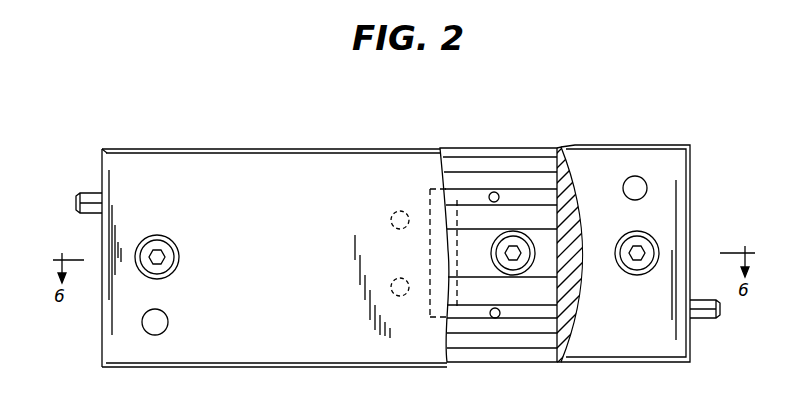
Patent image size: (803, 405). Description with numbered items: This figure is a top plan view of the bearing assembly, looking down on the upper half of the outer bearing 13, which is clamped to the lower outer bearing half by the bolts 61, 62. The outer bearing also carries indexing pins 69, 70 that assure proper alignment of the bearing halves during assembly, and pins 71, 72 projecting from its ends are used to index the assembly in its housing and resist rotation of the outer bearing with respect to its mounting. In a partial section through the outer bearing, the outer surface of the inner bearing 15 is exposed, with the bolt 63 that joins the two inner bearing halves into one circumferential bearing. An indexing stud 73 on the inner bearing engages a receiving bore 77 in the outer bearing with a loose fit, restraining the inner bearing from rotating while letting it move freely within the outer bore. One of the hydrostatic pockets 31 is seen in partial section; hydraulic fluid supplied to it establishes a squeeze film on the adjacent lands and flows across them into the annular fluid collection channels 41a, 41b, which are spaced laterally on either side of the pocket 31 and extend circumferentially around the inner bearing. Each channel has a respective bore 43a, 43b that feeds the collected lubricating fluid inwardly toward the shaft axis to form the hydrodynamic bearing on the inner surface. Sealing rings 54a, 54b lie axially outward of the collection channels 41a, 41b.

The upper half of the outer bearing 13 is at (187, 163).
The lower half of the inner bearing 15 is at (494, 249).
The hydrostatic pocket 31 is at (574, 232).
The fluid collection channel 41a is at (533, 197).
The fluid collection channel 41b is at (462, 316).
The bore 43a is at (494, 191).
The bore 43b is at (494, 319).
The sealing ring 54a is at (458, 165).
The sealing ring 54b is at (535, 340).
The bolt 61 is at (633, 248).
The bolt 62 is at (162, 260).
The bolt 63 is at (513, 249).
The indexing pin 69 is at (162, 327).
The indexing pin 70 is at (636, 176).
The pin 71 is at (92, 192).
The pin 72 is at (703, 316).
The indexing stud 73 is at (395, 215).
The receiving bore 77 is at (404, 297).